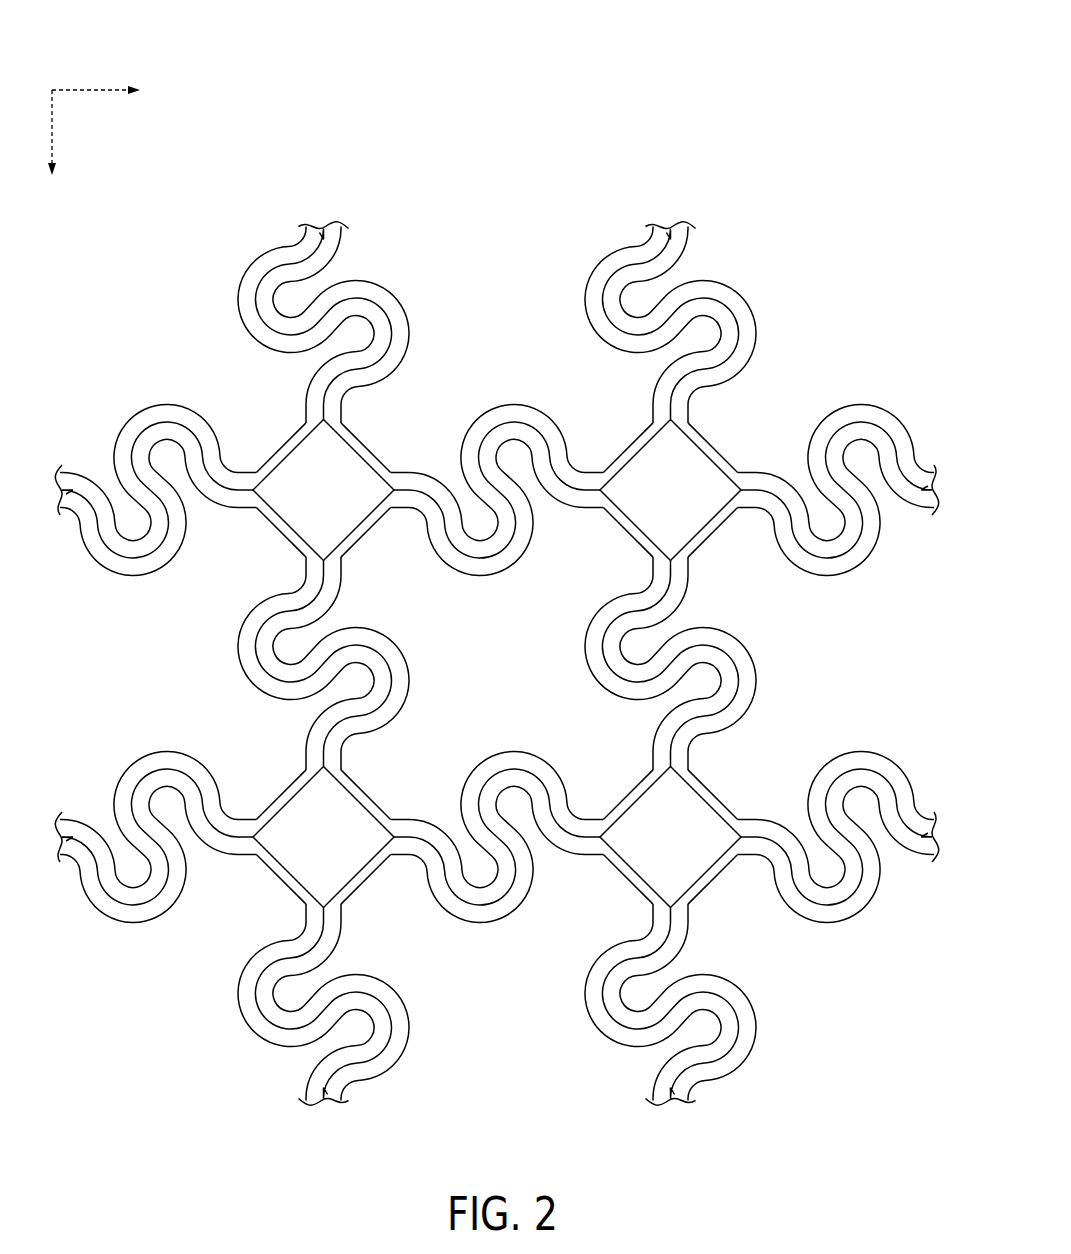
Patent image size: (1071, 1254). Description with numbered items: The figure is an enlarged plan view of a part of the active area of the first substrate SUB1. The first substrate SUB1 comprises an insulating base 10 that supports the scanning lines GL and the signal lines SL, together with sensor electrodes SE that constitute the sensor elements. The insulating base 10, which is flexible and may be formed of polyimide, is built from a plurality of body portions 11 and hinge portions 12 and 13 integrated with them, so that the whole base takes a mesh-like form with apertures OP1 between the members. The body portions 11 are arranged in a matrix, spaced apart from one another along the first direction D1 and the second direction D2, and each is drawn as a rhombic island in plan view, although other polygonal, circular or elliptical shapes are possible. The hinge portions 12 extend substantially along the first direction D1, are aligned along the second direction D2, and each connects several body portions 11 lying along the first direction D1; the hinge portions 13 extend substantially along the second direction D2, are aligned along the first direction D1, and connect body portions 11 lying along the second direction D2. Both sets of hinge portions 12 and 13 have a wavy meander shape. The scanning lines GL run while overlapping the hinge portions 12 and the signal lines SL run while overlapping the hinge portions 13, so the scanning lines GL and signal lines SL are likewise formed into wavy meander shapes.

The insulating base 10 is at (378, 295).
The body portions 11 is at (369, 552).
The hinge portions 12 is at (513, 396).
The hinge portions 13 is at (442, 738).
The sensor electrodes SE is at (500, 657).
The signal lines SL is at (393, 336).
The scanning lines GL is at (170, 423).
The first substrate SUB1 is at (703, 143).
The apertures OP1 is at (497, 623).
The first direction D1 is at (113, 91).
The second direction D2 is at (49, 150).